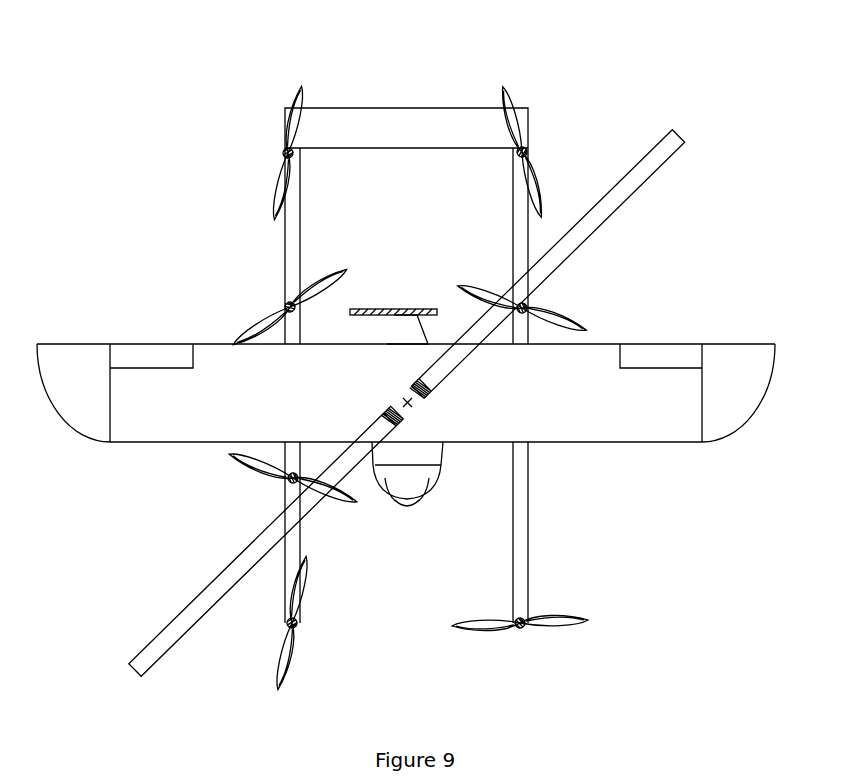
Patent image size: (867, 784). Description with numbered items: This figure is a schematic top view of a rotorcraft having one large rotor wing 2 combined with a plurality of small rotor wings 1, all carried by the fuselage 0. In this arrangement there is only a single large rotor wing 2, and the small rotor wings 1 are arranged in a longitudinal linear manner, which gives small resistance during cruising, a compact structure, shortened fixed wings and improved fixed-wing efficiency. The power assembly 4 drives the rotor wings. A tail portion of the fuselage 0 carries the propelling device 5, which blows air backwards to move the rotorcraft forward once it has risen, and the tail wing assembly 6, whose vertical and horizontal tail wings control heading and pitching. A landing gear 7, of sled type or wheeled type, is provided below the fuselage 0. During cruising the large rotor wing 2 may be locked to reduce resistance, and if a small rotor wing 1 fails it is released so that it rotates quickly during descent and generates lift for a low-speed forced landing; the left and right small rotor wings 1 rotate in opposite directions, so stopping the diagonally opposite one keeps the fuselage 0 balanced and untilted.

The fuselage 0 is at (88, 356).
The small rotor wing 1 is at (307, 98).
The large rotor wing 2 is at (158, 642).
The power assembly 4 is at (290, 157).
The propelling device 5 is at (392, 312).
The tail wing assembly 6 is at (398, 125).
The landing gear 7 is at (407, 517).